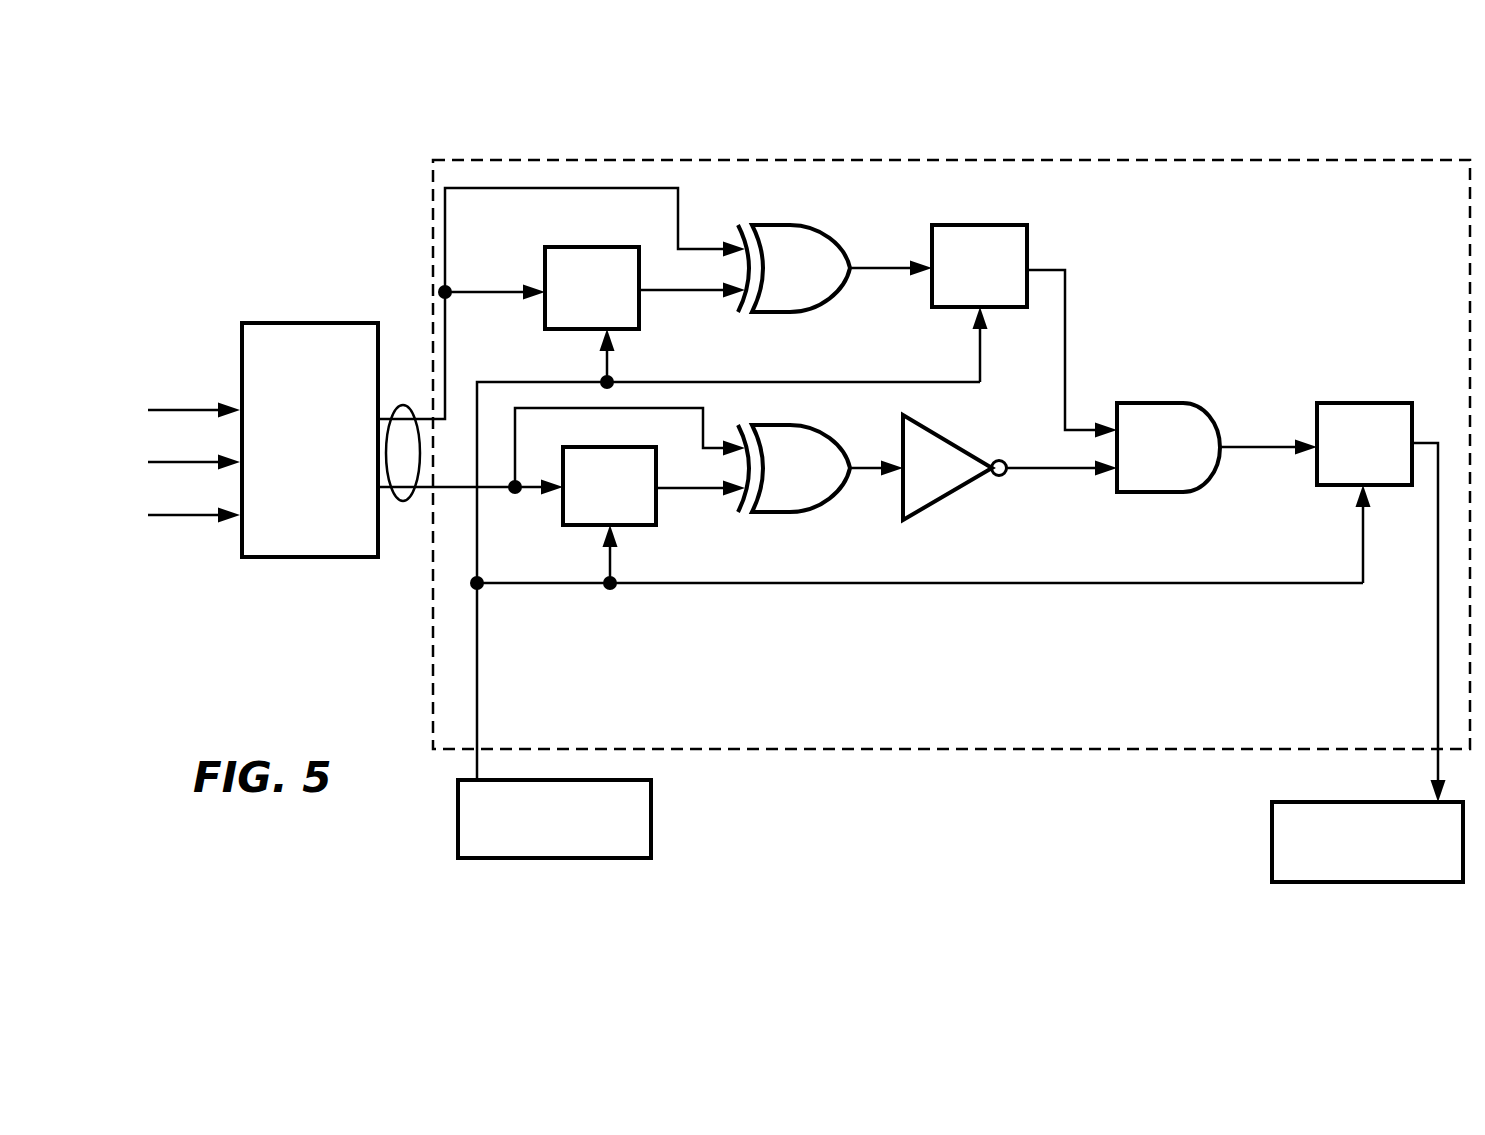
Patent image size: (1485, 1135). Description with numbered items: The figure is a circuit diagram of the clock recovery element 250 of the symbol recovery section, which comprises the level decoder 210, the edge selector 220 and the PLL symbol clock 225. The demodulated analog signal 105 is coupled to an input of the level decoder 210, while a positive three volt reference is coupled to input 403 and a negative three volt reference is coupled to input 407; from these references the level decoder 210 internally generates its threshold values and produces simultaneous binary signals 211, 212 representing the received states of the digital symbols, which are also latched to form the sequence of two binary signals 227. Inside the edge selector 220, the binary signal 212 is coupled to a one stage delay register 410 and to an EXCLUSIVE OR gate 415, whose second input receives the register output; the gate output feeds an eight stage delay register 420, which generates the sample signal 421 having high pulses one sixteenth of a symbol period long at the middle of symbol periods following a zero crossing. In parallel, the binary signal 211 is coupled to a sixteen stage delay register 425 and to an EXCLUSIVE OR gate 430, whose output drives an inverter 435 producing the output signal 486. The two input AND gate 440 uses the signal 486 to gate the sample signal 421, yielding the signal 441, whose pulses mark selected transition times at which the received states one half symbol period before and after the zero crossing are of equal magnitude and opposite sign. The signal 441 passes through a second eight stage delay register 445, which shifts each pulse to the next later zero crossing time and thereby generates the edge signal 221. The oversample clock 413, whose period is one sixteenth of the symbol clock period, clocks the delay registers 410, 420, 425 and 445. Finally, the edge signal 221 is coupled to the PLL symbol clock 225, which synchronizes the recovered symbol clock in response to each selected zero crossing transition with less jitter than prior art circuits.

The analog signal 105 is at (200, 407).
The input 403 is at (237, 453).
The input 407 is at (237, 503).
The level decoder 210 is at (353, 322).
The binary signal 212 is at (440, 322).
The binary signal 211 is at (460, 487).
The sequence of two binary signals 227 is at (405, 503).
The one stage delay register 410 is at (565, 247).
The EXCLUSIVE OR gate 415 is at (767, 223).
The eight stage delay register 420 is at (970, 223).
The sample signal 421 is at (1067, 337).
The sixteen stage delay register 425 is at (638, 527).
The EXCLUSIVE OR gate 430 is at (765, 515).
The inverter 435 is at (922, 513).
The output signal 486 is at (1022, 470).
The two input AND gate 440 is at (1145, 493).
The signal 441 is at (1233, 443).
The eight stage delay register 445 is at (1337, 402).
The edge signal 221 is at (1437, 693).
The edge selector 220 is at (888, 752).
The clock recovery element 250 is at (343, 724).
The oversample clock 413 is at (652, 833).
The PLL symbol clock 225 is at (1272, 830).